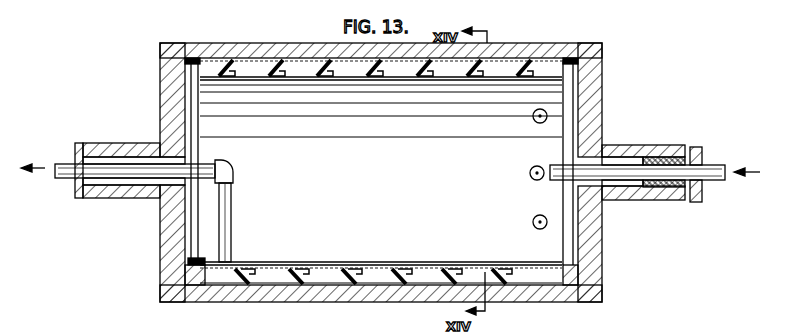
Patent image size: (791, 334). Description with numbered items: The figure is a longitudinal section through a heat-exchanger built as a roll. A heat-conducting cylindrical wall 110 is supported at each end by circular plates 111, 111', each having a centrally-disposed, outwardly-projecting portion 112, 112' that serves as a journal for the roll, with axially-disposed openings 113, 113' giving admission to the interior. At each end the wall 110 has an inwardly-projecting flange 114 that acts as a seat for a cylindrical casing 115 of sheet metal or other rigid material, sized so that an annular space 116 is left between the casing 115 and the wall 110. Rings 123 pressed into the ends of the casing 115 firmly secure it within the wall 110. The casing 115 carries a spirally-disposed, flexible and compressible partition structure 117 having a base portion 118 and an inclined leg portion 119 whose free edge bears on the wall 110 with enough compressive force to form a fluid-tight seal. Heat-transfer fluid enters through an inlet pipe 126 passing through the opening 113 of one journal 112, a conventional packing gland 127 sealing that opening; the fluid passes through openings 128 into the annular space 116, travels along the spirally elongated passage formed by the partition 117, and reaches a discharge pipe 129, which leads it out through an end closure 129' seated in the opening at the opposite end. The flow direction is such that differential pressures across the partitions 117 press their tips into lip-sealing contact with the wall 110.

The heat-conducting cylindrical wall 110 is at (447, 290).
The circular plate 111 is at (356, 172).
The circular plate 111' is at (619, 172).
The outwardly-projecting portion 112 is at (117, 155).
The outwardly-projecting portion 112' is at (643, 159).
The axially-disposed opening 113 is at (134, 194).
The axially-disposed opening 113' is at (630, 194).
The inwardly-projecting flange 114 is at (185, 287).
The cylindrical casing 115 is at (486, 300).
The annular space 116 is at (378, 277).
The spirally-disposed partition structure 117 is at (268, 288).
The base portion 118 is at (280, 281).
The inclined leg portion 119 is at (303, 288).
The ring 123 is at (200, 150).
The inlet pipe 126 is at (715, 172).
The packing gland 127 is at (668, 160).
The openings 128 is at (535, 215).
The discharge pipe 129 is at (243, 211).
The end closure 129' is at (112, 189).